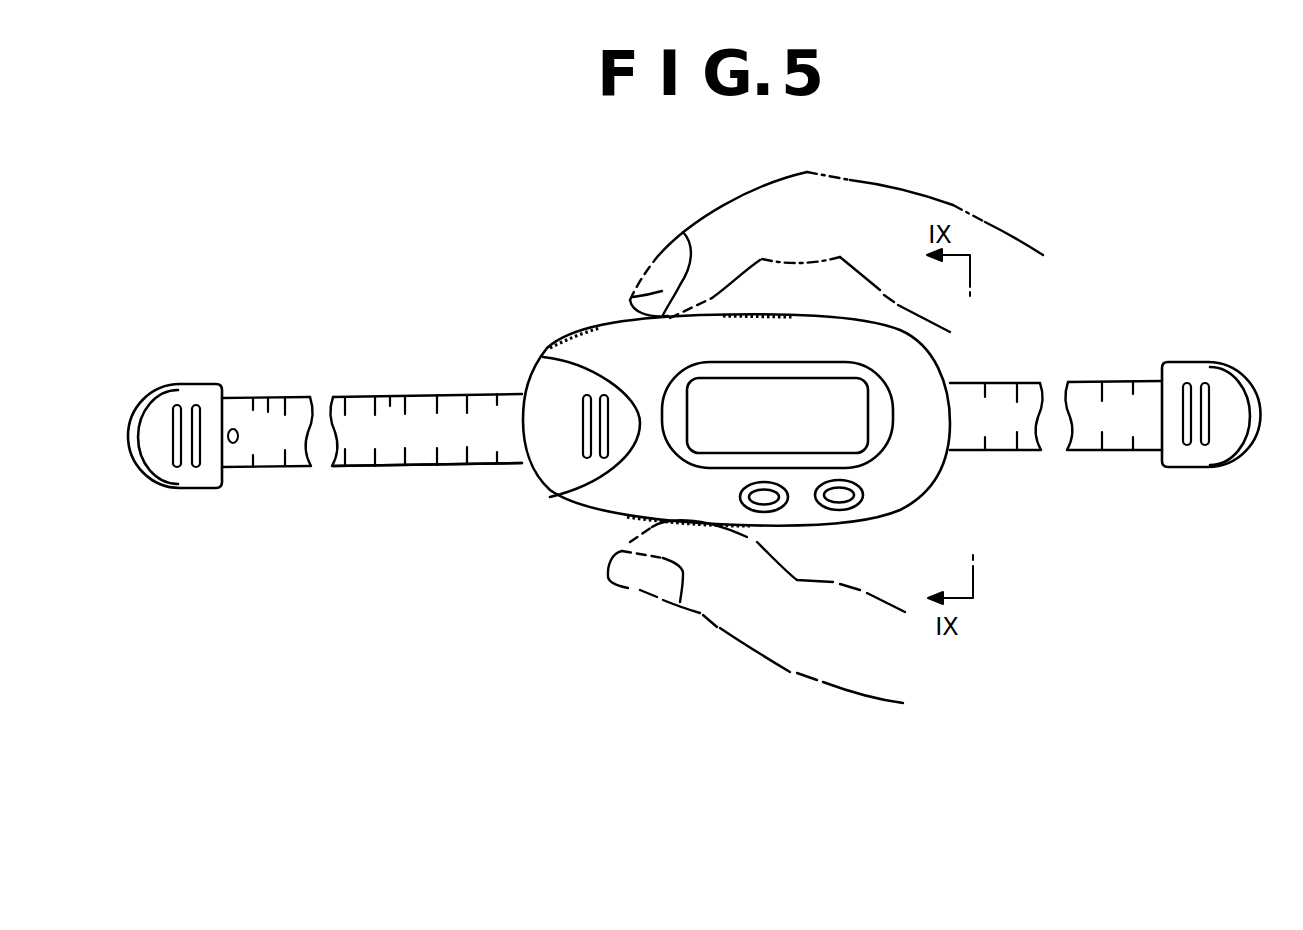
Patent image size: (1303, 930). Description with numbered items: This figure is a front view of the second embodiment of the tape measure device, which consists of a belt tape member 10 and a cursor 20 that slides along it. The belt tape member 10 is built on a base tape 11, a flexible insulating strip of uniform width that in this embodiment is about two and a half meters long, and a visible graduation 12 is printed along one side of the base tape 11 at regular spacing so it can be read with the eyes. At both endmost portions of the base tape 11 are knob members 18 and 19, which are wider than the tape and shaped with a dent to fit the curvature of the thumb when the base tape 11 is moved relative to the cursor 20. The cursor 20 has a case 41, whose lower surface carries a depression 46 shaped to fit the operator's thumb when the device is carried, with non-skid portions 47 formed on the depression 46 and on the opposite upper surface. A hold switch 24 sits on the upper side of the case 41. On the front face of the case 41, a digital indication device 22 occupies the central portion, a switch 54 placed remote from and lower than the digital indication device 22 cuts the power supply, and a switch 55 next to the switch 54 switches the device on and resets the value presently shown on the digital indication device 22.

The belt tape member 10 is at (388, 397).
The base tape 11 is at (267, 417).
The visible graduation 12 is at (405, 455).
The knob member 18 is at (177, 390).
The knob member 19 is at (1210, 378).
The cursor 20 is at (623, 337).
The digital indication device 22 is at (853, 402).
The hold switch 24 is at (662, 312).
The case 41 is at (587, 505).
The depression 46 is at (637, 513).
The non-skid portions 47 is at (568, 341).
The switch 54 is at (777, 502).
The switch 55 is at (852, 500).